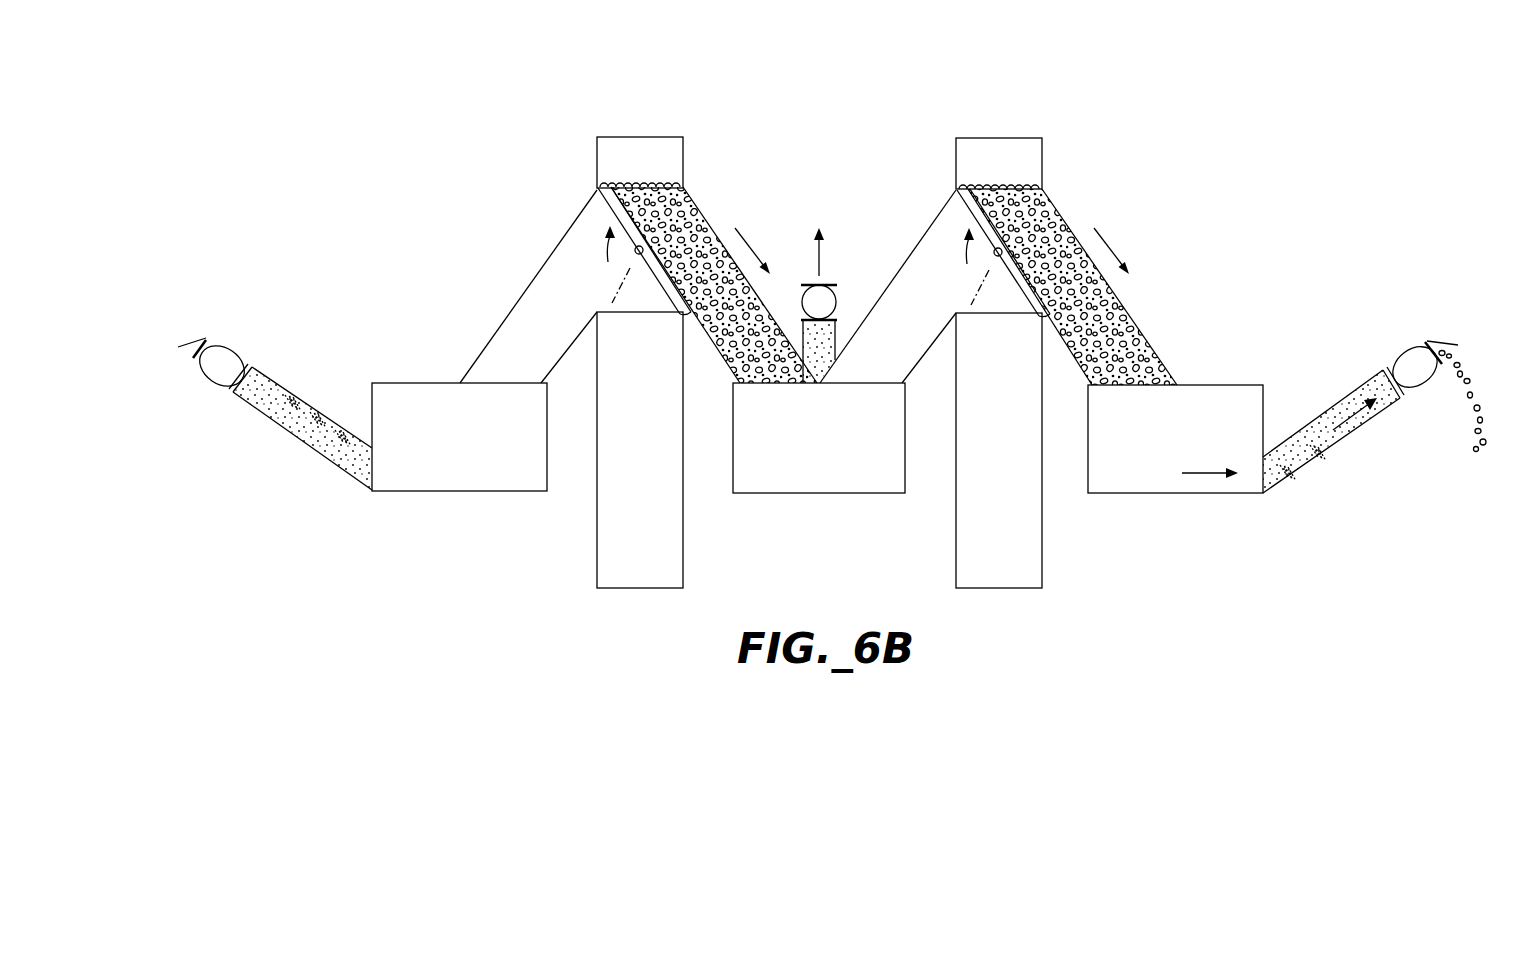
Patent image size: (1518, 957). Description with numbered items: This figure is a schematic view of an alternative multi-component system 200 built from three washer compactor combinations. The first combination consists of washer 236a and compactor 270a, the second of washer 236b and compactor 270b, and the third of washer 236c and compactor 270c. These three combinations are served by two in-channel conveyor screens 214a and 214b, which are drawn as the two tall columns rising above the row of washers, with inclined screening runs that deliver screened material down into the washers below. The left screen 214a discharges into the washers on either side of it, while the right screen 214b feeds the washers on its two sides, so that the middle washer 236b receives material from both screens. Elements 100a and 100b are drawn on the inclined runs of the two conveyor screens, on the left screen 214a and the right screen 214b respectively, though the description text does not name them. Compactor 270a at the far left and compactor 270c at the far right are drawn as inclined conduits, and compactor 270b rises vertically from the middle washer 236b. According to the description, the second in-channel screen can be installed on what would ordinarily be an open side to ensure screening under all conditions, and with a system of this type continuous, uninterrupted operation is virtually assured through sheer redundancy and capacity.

The multi-component system 200 is at (1133, 47).
The in-channel conveyor screen 214a is at (607, 168).
The in-channel conveyor screen 214b is at (1030, 172).
The first separating apparatus 100a is at (607, 217).
The second separating apparatus 100b is at (966, 219).
The washer 236a is at (437, 397).
The washer 236b is at (825, 483).
The washer 236c is at (1190, 395).
The compactor 270a is at (272, 393).
The compactor 270b is at (820, 283).
The compactor 270c is at (1360, 387).